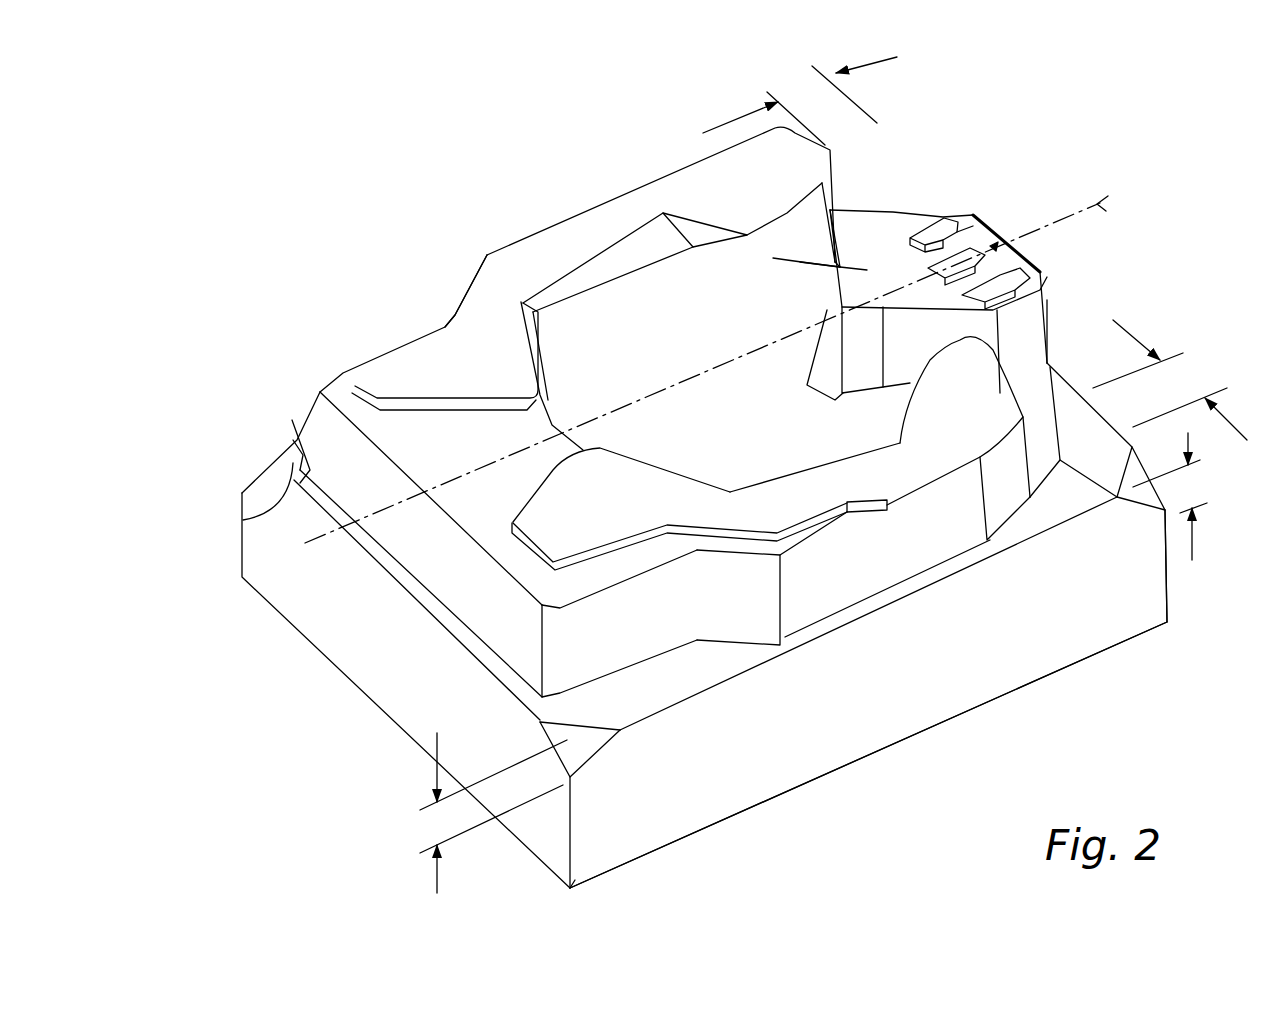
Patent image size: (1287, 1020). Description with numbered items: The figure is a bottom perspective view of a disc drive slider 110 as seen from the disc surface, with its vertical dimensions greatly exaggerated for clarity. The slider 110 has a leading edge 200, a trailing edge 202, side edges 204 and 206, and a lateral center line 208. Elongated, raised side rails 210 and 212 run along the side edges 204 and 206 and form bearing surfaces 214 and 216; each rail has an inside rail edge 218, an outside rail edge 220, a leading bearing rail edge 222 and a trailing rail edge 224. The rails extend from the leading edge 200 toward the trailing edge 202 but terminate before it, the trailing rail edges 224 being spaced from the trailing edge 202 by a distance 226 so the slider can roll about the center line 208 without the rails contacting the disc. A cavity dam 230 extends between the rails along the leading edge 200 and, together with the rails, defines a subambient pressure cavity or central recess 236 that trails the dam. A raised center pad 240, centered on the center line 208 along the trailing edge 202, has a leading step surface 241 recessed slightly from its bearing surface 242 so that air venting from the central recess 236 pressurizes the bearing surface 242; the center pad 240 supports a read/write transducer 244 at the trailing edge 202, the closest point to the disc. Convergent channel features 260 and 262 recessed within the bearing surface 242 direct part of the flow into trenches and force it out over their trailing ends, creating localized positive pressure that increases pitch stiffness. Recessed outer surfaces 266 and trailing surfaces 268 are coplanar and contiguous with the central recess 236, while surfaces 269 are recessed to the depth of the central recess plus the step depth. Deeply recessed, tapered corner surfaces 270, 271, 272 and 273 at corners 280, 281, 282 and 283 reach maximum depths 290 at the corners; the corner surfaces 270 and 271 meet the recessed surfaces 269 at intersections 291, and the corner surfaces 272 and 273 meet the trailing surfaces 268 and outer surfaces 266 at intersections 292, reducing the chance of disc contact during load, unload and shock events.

The slider 110 is at (420, 178).
The leading edge 200 is at (340, 608).
The trailing edge 202 is at (915, 210).
The side edge 204 is at (297, 440).
The side edge 206 is at (857, 713).
The lateral center line 208 is at (1100, 203).
The side rail 210 is at (457, 353).
The side rail 212 is at (627, 493).
The bearing surface 214 is at (510, 270).
The bearing surface 216 is at (703, 497).
The inside rail edge 218 is at (567, 273).
The outside rail edge 220 is at (590, 207).
The leading bearing rail edge 222 is at (333, 370).
The trailing rail edge 224 is at (1045, 343).
The distance 226 is at (763, 108).
The cavity dam 230 is at (500, 379).
The subambient pressure cavity 236 is at (788, 355).
The center pad 240 is at (840, 293).
The leading step surface 241 is at (780, 259).
The bearing surface 242 is at (1000, 257).
The read/write transducer 244 is at (993, 237).
The convergent channel feature 260 is at (973, 215).
The convergent channel feature 262 is at (1033, 270).
The outer surface 266 is at (958, 562).
The trailing surface 268 is at (880, 233).
The recessed surface 269 is at (300, 447).
The recessed corner surface 270 is at (587, 748).
The recessed corner surface 271 is at (273, 478).
The recessed corner surface 272 is at (857, 210).
The recessed corner surface 273 is at (1143, 500).
The corner 280 is at (573, 862).
The corner 281 is at (237, 553).
The corner 282 is at (893, 210).
The corner 283 is at (1163, 627).
The maximum depth 290 is at (440, 820).
The intersection 291 is at (243, 518).
The intersection 292 is at (1127, 463).